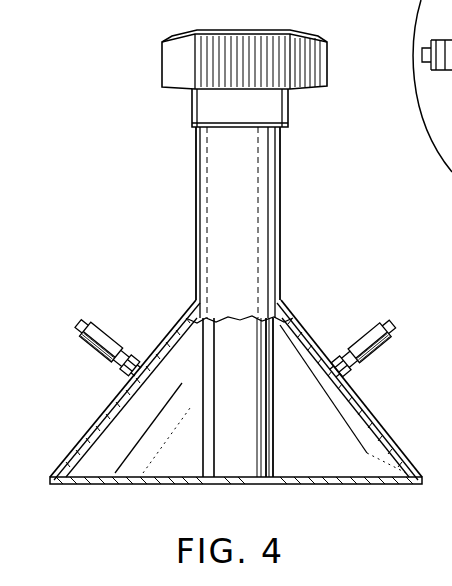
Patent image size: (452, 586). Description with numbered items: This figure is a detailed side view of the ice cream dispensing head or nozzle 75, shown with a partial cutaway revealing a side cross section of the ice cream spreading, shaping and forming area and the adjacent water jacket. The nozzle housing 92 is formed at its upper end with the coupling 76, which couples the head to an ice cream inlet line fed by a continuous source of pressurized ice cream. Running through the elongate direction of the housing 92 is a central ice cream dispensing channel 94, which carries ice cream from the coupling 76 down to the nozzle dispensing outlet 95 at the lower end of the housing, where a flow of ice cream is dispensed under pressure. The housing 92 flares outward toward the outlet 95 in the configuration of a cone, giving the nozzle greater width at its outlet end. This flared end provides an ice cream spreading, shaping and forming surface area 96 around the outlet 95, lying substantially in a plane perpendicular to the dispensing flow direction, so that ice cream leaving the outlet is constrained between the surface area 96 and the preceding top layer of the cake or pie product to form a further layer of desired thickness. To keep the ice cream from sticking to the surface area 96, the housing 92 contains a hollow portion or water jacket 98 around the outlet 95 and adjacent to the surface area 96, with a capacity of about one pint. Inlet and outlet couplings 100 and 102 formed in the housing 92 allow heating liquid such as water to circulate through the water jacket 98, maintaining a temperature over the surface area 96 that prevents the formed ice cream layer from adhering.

The coupling 76 is at (162, 62).
The nozzle housing 92 is at (186, 304).
The ice cream dispensing head or nozzle 75 is at (299, 306).
The central ice cream dispensing channel 94 is at (218, 396).
The nozzle dispensing outlet 95 is at (237, 463).
The ice cream spreading, shaping and forming surface area 96 is at (348, 485).
The water jacket 98 is at (170, 459).
The inlet coupling 100 is at (376, 354).
The outlet coupling 102 is at (108, 348).